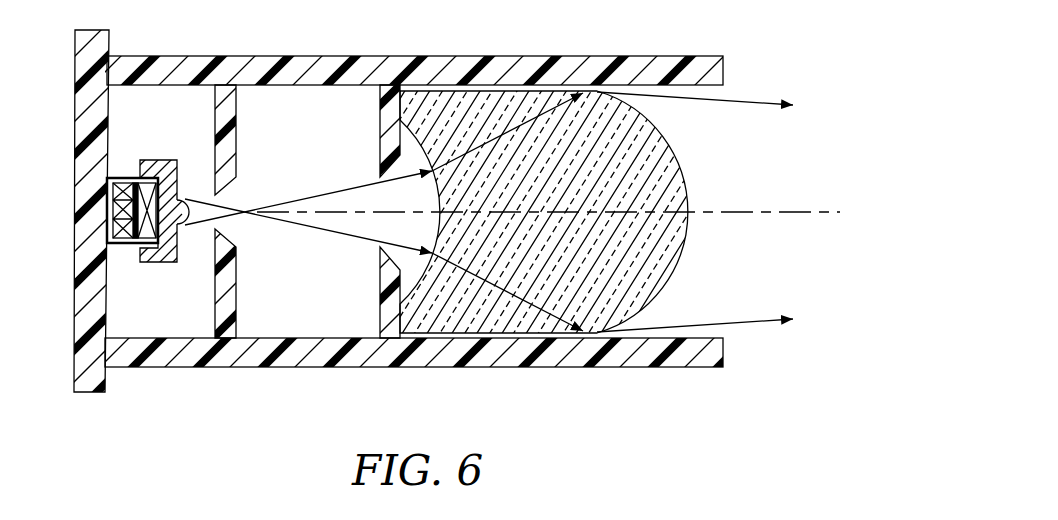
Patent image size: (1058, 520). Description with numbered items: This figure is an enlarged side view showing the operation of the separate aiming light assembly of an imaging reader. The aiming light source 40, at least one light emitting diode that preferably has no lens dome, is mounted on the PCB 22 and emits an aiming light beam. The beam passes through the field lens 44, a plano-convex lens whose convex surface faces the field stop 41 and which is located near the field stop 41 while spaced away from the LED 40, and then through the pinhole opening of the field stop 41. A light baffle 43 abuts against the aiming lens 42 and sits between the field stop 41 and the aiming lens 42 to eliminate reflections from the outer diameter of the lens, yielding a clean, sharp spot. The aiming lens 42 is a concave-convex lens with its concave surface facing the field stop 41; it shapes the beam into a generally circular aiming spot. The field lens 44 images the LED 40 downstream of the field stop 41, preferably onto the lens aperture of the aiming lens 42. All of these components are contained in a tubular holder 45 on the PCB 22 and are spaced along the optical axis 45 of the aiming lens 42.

The PCB 22 is at (74, 323).
The aiming light source 40 is at (122, 240).
The field stop 41 is at (236, 304).
The aiming lens 42 is at (657, 275).
The light baffle 43 is at (380, 303).
The field lens 44 is at (164, 259).
The tubular holder 45 is at (410, 67).